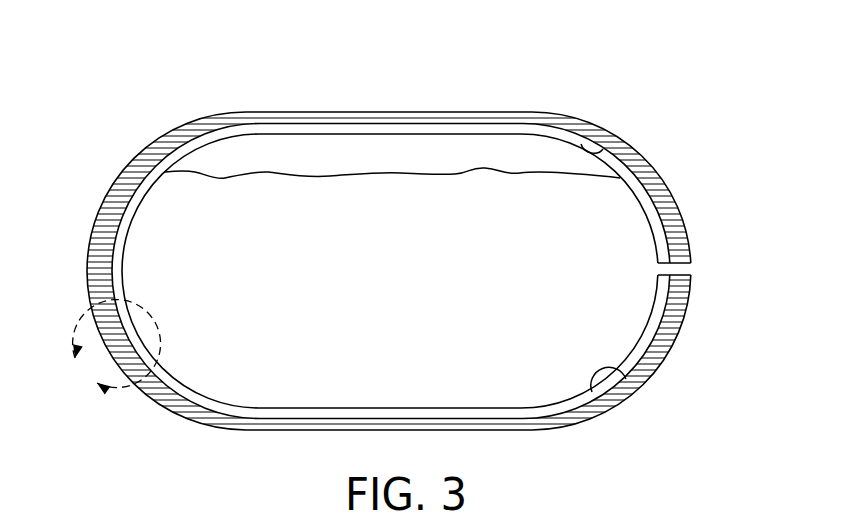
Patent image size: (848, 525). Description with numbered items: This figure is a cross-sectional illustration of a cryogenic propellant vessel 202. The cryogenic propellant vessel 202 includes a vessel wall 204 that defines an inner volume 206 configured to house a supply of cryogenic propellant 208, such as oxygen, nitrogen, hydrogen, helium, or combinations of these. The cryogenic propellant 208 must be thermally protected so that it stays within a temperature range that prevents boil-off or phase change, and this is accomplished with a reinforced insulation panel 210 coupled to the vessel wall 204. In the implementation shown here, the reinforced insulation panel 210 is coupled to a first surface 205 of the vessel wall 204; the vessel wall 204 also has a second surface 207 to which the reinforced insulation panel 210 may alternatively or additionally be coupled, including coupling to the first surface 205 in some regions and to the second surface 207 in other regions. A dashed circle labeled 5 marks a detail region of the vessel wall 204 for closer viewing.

The cryogenic propellant vessel 202 is at (142, 113).
The vessel wall 204 is at (602, 150).
The first surface 205 is at (674, 342).
The inner volume 206 is at (289, 165).
The second surface 207 is at (592, 386).
The cryogenic propellant 208 is at (417, 283).
The reinforced insulation panel 210 is at (695, 243).
The detail view circle 5 is at (82, 323).